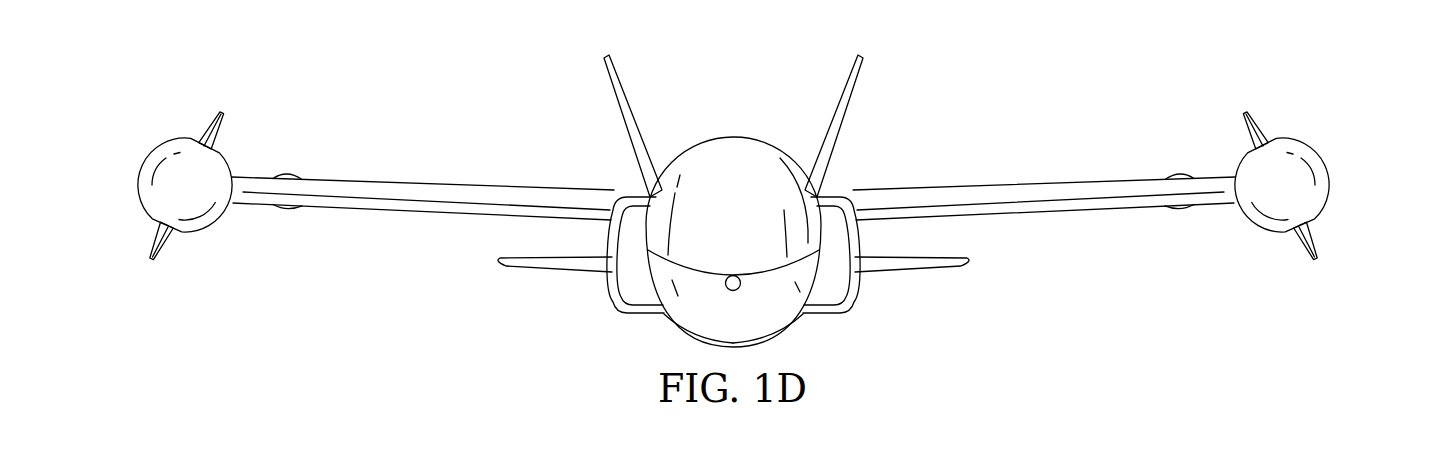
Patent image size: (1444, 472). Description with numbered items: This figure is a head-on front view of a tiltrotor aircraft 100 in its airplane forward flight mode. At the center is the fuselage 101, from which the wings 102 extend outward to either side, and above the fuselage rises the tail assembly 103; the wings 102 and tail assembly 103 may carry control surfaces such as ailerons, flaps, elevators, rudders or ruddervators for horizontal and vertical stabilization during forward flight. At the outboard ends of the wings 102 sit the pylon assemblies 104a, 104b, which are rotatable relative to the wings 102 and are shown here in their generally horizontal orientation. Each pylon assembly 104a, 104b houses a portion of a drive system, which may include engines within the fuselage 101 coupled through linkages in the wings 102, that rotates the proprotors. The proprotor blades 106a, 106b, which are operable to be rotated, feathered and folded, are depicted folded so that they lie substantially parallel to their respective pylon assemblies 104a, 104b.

The tiltrotor aircraft 100 is at (1025, 53).
The fuselage 101 is at (734, 136).
The wings 102 is at (422, 211).
The tail assembly 103 is at (631, 128).
The pylon assembly 104a is at (138, 187).
The pylon assembly 104b is at (1329, 187).
The proprotor blades 106a is at (221, 112).
The proprotor blades 106b is at (1246, 112).